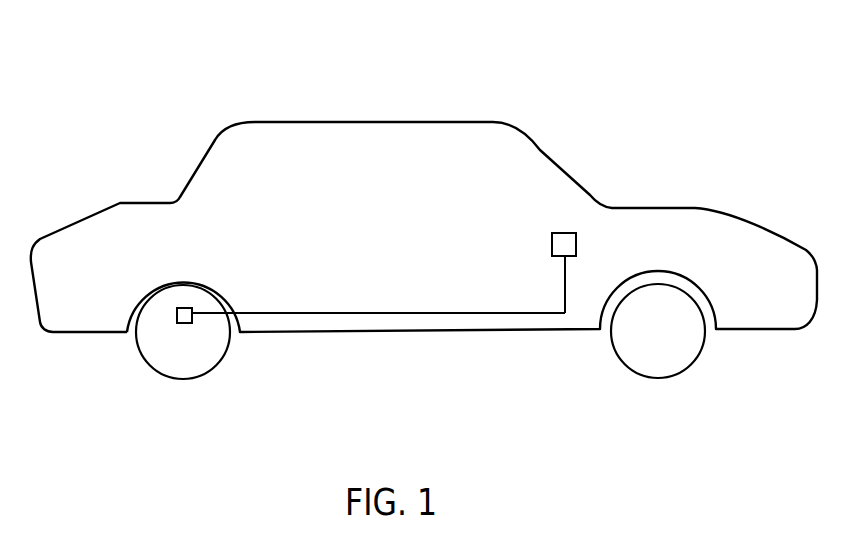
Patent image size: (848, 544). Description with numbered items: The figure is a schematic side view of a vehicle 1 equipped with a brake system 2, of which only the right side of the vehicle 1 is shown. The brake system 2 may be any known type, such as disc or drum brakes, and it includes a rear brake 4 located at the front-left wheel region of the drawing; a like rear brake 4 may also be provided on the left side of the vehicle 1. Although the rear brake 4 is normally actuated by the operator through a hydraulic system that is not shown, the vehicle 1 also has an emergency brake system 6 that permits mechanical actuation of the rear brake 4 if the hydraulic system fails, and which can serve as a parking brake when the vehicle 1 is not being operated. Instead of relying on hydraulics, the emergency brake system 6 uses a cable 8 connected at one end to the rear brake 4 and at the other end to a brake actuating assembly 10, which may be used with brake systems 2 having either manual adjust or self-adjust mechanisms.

The vehicle 1 is at (189, 82).
The brake system 2 is at (166, 301).
The rear brake 4 is at (185, 323).
The emergency brake system 6 is at (585, 270).
The cable 8 is at (318, 313).
The brake actuating assembly 10 is at (555, 233).